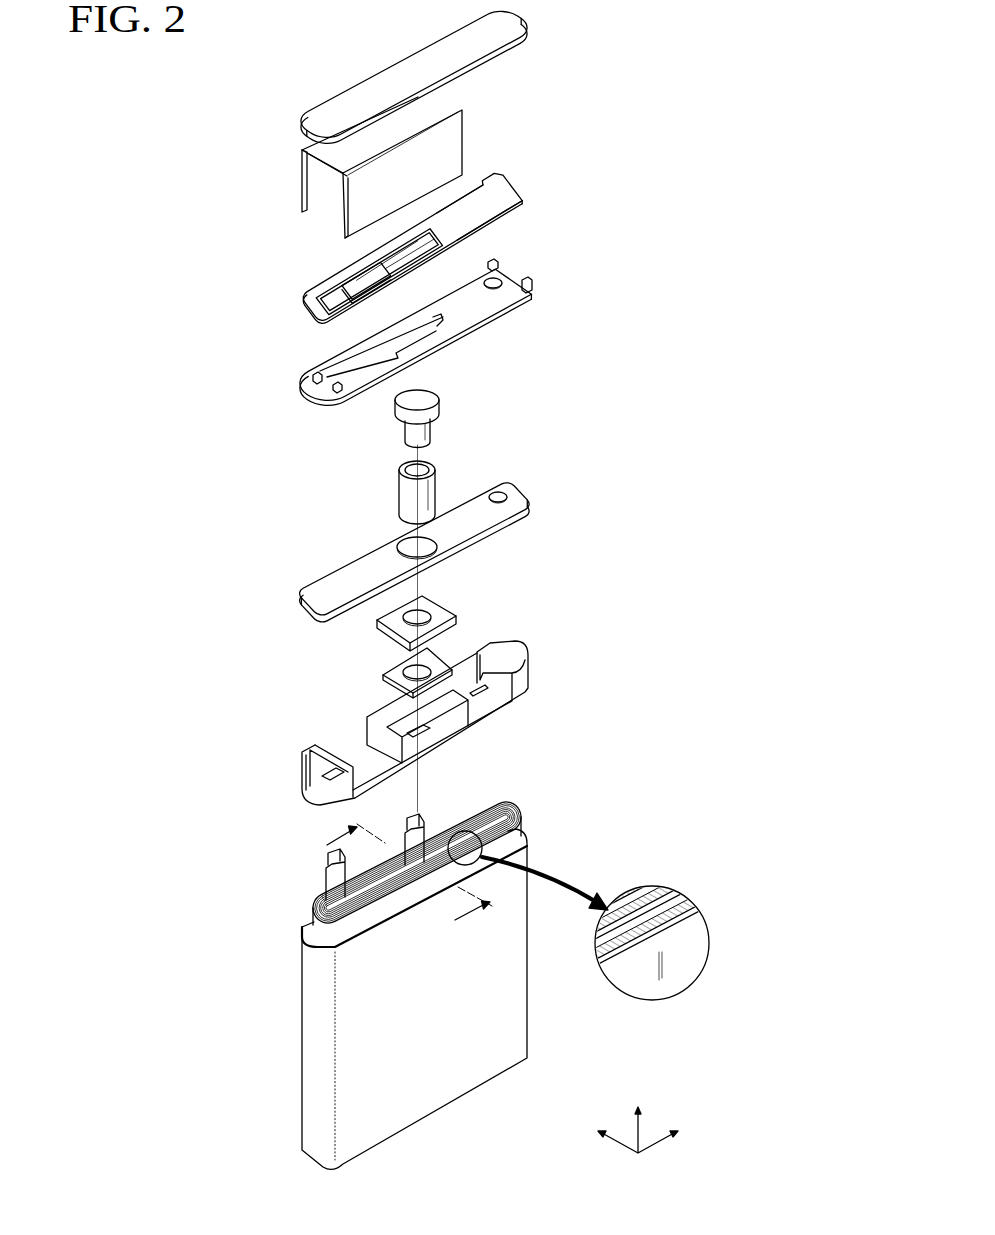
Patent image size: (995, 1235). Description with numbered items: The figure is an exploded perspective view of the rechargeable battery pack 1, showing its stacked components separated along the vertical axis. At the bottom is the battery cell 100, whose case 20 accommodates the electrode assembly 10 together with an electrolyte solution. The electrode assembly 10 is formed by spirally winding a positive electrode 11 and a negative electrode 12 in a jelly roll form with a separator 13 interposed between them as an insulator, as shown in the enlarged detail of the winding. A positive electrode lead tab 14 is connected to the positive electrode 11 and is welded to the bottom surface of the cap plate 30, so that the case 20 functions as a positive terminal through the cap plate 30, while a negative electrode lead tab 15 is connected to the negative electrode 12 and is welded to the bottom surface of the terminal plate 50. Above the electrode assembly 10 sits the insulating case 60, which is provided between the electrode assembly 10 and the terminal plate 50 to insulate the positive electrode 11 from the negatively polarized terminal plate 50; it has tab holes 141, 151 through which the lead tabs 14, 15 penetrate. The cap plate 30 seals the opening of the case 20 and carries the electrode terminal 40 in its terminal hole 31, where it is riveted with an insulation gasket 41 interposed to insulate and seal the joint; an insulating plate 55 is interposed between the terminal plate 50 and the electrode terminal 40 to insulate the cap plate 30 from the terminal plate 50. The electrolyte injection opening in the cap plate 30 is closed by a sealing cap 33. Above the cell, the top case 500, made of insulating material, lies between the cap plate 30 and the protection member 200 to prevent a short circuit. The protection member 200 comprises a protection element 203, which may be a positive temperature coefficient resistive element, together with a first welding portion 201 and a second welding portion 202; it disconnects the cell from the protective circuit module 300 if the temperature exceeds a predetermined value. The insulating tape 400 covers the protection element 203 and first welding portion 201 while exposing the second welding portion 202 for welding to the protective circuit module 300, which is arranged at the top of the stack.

The rechargeable battery pack 1 is at (625, 23).
The electrode assembly 10 is at (505, 867).
The positive electrode 11 is at (688, 900).
The negative electrode 12 is at (712, 910).
The separator 13 is at (600, 975).
The positive electrode lead tab 14 is at (330, 857).
The negative electrode lead tab 15 is at (418, 816).
The case 20 is at (318, 1062).
The cap plate 30 is at (408, 534).
The terminal hole 31 is at (407, 543).
The sealing cap 33 is at (497, 495).
The electrode terminal 40 is at (428, 397).
The insulation gasket 41 is at (407, 488).
The terminal plate 50 is at (433, 663).
The insulating plate 55 is at (438, 610).
The insulating case 60 is at (407, 723).
The battery cell 100 is at (563, 475).
The tab hole 141 is at (327, 780).
The tab hole 151 is at (400, 742).
The protection member 200 is at (409, 229).
The first welding portion 201 is at (403, 256).
The second welding portion 202 is at (498, 215).
The protection element 203 is at (342, 287).
The protective circuit module 300 is at (356, 70).
The insulating tape 400 is at (452, 138).
The top case 500 is at (298, 400).